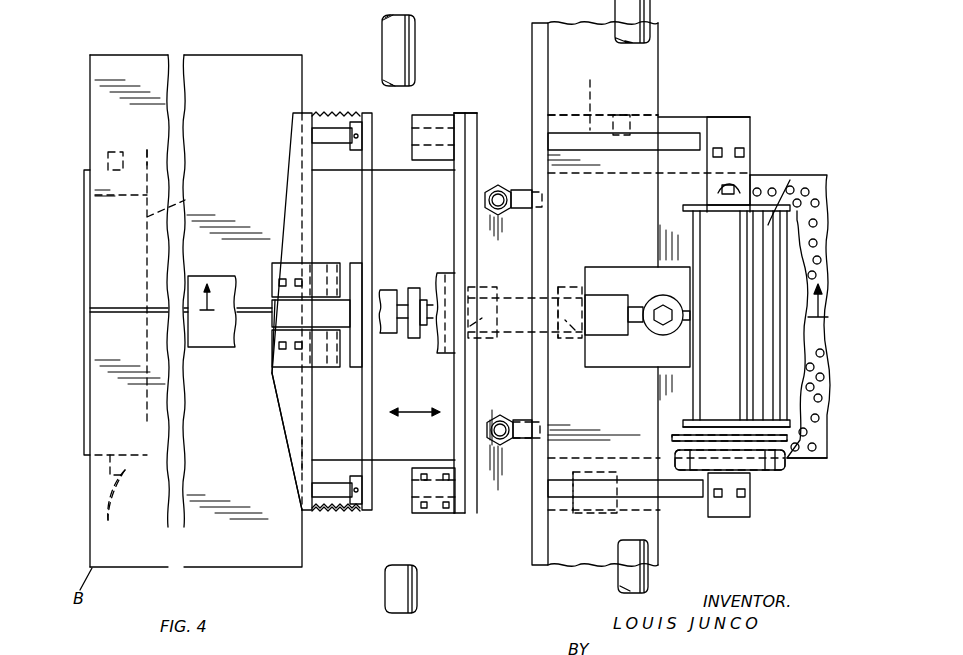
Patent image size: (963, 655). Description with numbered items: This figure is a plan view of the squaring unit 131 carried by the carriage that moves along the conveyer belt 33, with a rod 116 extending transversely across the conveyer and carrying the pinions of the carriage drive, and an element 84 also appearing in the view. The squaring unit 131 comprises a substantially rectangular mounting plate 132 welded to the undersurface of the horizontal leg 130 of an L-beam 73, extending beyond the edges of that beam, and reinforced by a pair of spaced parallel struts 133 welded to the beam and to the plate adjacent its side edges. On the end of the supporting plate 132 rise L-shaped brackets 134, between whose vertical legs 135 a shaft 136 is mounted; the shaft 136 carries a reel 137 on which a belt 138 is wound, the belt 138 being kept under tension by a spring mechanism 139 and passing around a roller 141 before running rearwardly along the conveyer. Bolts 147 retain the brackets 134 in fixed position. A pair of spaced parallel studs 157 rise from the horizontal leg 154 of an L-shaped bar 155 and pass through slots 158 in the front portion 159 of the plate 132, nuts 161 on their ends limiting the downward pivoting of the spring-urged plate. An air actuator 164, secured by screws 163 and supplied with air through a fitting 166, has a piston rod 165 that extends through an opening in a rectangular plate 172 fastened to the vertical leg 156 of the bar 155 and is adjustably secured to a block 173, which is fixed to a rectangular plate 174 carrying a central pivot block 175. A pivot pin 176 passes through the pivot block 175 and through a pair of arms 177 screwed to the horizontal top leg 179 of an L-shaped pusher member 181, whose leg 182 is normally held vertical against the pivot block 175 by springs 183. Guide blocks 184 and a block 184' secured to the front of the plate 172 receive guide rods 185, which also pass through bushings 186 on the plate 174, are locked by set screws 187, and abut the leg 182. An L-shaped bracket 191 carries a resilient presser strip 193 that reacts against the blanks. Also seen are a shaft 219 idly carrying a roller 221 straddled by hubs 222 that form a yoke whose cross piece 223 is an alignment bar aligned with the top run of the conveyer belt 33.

The conveyer belt 33 is at (827, 458).
The L-beam 73 is at (556, 35).
The guide cylinder 84 is at (650, 20).
The rod 116 is at (398, 58).
The horizontal leg 130 is at (590, 42).
The squaring unit 131 is at (470, 105).
The mounting plate 132 is at (665, 115).
The struts 133 is at (664, 150).
The L-shaped brackets 134 is at (745, 148).
The vertical legs 135 is at (740, 208).
The shaft 136 is at (722, 186).
The reel 137 is at (690, 405).
The belt 138 is at (790, 180).
The spring mechanism 139 is at (725, 470).
The roller 141 is at (790, 180).
The bolts 147 is at (718, 147).
The horizontal leg 154 is at (557, 120).
The L-shaped bar 155 is at (487, 125).
The vertical leg 156 is at (470, 158).
The studs 157 is at (498, 192).
The slots 158 is at (520, 210).
The front portion 159 is at (502, 445).
The nuts 161 is at (520, 186).
The screws 163 is at (497, 340).
The air actuator 164 is at (553, 308).
The piston rod 165 is at (426, 340).
The fitting 166 is at (655, 305).
The rectangular plate 172 is at (452, 242).
The block 173 is at (401, 292).
The rectangular plate 174 is at (372, 240).
The pivot block 175 is at (400, 335).
The pivot pin 176 is at (395, 360).
The arms 177 is at (278, 268).
The horizontal top leg 179 is at (290, 440).
The pusher member 181 is at (272, 402).
The leg 182 is at (298, 474).
The springs 183 is at (328, 112).
The guide blocks 184 is at (597, 285).
The block 184' is at (428, 314).
The guide rods 185 is at (622, 112).
The bushing 186 is at (356, 124).
The set screws 187 is at (340, 520).
The L-shaped bracket 191 is at (452, 272).
The resilient presser strip 193 is at (188, 290).
The shaft 219 is at (125, 508).
The roller 221 is at (150, 150).
The hubs 222 is at (185, 205).
The cross piece 223 is at (84, 182).